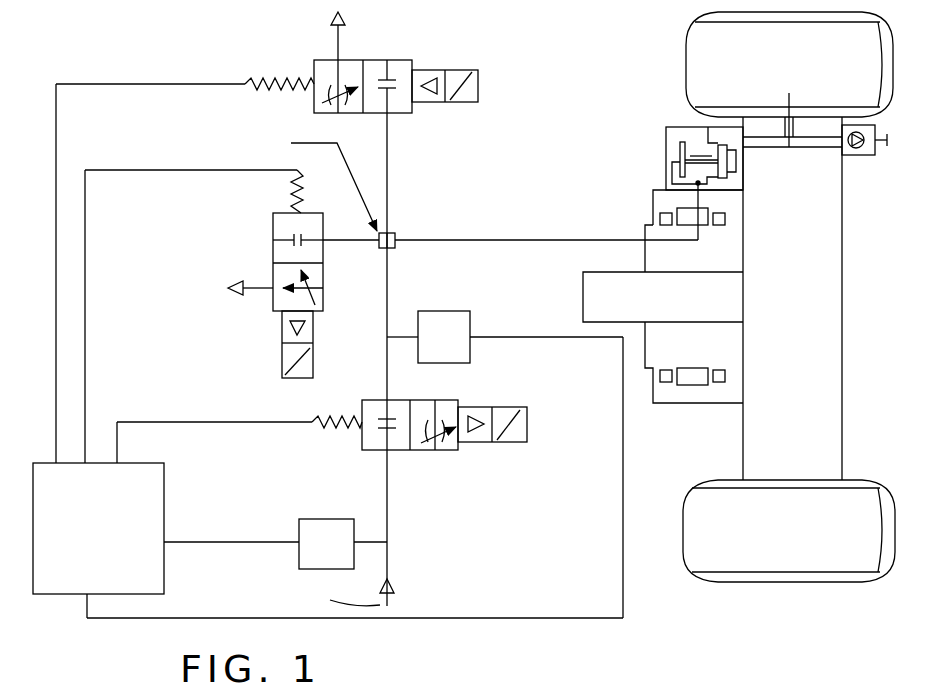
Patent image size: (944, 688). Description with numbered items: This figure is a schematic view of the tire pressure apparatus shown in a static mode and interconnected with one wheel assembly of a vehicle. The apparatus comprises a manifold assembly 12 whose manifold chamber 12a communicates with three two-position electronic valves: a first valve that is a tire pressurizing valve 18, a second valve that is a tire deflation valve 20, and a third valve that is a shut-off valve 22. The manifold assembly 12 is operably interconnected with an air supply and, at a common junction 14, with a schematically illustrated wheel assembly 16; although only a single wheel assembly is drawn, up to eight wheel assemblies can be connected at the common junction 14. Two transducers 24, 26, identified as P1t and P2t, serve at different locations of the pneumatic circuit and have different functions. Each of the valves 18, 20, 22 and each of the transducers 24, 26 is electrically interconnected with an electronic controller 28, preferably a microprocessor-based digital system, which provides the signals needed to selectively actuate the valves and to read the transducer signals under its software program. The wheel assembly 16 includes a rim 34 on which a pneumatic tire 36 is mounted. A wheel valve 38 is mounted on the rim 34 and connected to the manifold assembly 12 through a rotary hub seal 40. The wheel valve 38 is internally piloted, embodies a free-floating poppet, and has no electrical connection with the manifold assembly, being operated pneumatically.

The manifold assembly 12 is at (424, 232).
The manifold chamber 12a is at (391, 231).
The common junction 14 is at (396, 249).
The wheel assembly 16 is at (845, 258).
The tire pressurizing valve 18 is at (530, 417).
The tire deflation valve 20 is at (313, 57).
The shut-off valve 22 is at (262, 240).
The transducer 24 is at (473, 323).
The transducer 26 is at (327, 519).
The electronic controller 28 is at (152, 495).
The rim 34 is at (817, 359).
The pneumatic tire 36 is at (789, 64).
The wheel valve 38 is at (665, 122).
The rotary hub seal 40 is at (727, 255).